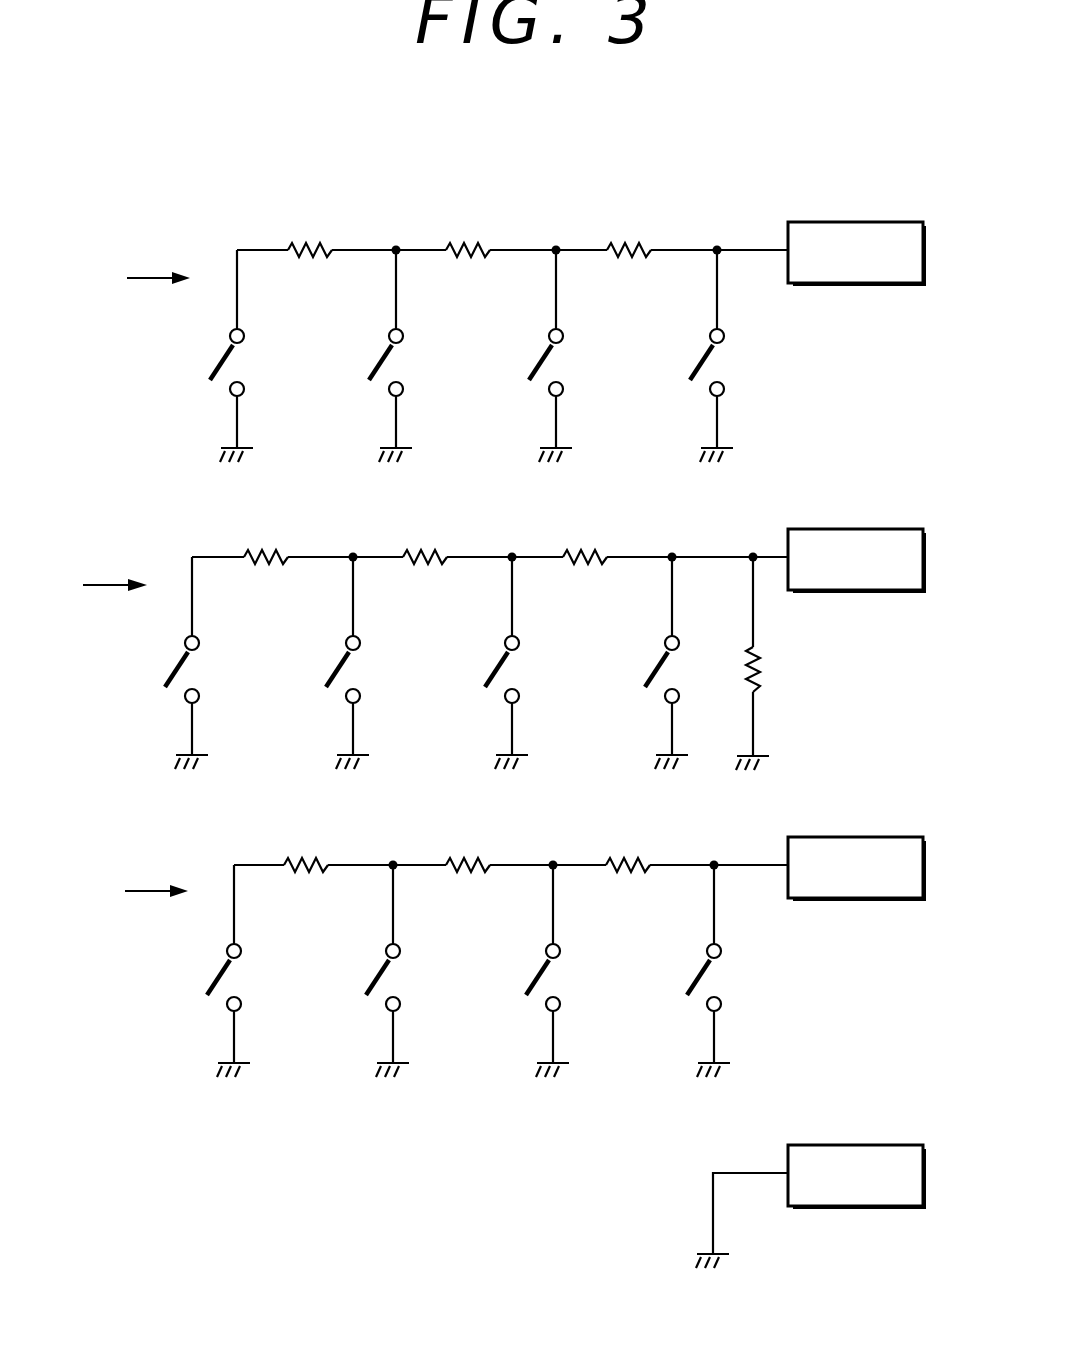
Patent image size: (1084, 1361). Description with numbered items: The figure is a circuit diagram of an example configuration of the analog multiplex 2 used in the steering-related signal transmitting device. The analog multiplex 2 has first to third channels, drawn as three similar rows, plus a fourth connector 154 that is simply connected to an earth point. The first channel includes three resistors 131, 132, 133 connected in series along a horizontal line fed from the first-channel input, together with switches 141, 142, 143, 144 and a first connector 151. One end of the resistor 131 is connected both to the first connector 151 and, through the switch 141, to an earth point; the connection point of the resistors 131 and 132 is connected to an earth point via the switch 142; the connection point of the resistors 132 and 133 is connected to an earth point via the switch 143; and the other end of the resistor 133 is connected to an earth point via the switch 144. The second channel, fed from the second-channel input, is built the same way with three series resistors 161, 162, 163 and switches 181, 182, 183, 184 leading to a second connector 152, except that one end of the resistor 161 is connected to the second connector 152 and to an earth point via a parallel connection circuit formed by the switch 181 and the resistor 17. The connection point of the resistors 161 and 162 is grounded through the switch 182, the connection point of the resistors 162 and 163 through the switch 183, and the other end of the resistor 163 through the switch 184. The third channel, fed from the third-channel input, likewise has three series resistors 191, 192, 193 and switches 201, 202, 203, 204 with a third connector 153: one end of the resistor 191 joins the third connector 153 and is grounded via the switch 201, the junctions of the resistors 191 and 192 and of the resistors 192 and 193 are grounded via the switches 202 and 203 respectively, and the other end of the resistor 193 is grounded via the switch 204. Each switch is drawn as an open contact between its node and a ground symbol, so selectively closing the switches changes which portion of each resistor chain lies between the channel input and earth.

The analog multiplex 2 is at (778, 159).
The resistor 131 is at (663, 227).
The resistor 132 is at (502, 227).
The resistor 133 is at (344, 227).
The switch 141 is at (752, 356).
The switch 142 is at (591, 356).
The switch 143 is at (431, 356).
The switch 144 is at (272, 356).
The first connector 151 is at (877, 229).
The second connector 152 is at (877, 536).
The third connector 153 is at (877, 844).
The fourth connector 154 is at (830, 1182).
The resistor 161 is at (619, 534).
The resistor 162 is at (459, 534).
The resistor 163 is at (300, 534).
The resistor 17 is at (760, 672).
The switch 181 is at (680, 675).
The switch 182 is at (547, 663).
The switch 183 is at (388, 663).
The switch 184 is at (227, 663).
The resistor 191 is at (662, 842).
The resistor 192 is at (502, 842).
The resistor 193 is at (340, 842).
The switch 201 is at (749, 971).
The switch 202 is at (588, 971).
The switch 203 is at (428, 971).
The switch 204 is at (269, 971).